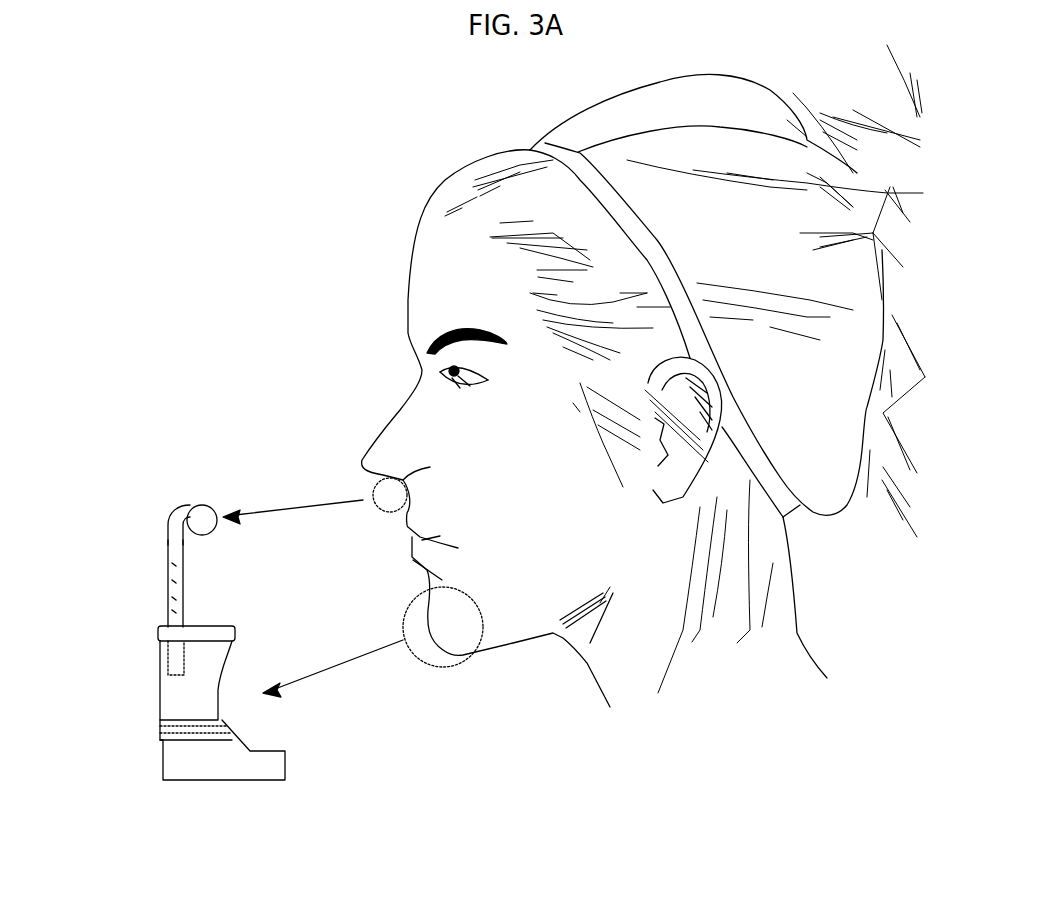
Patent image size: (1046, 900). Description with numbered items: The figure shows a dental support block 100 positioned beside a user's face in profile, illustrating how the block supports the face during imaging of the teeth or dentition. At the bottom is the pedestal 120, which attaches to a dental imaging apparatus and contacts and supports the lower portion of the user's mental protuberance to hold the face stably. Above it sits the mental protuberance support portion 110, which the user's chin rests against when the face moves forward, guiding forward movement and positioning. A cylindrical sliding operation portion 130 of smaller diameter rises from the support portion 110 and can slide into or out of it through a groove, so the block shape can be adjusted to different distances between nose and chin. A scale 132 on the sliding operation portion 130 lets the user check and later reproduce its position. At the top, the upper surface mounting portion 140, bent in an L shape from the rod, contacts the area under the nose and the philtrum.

The dental support block 100 is at (140, 470).
The mental protuberance support portion 110 is at (168, 688).
The pedestal 120 is at (166, 762).
The sliding operation portion 130 is at (160, 590).
The scale 132 is at (165, 573).
The upper surface mounting portion 140 is at (205, 508).